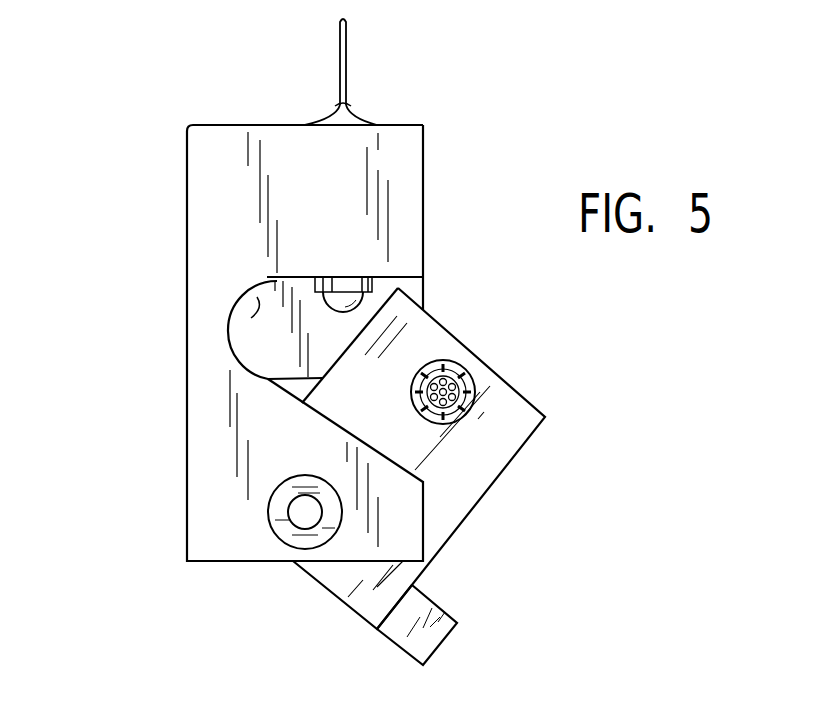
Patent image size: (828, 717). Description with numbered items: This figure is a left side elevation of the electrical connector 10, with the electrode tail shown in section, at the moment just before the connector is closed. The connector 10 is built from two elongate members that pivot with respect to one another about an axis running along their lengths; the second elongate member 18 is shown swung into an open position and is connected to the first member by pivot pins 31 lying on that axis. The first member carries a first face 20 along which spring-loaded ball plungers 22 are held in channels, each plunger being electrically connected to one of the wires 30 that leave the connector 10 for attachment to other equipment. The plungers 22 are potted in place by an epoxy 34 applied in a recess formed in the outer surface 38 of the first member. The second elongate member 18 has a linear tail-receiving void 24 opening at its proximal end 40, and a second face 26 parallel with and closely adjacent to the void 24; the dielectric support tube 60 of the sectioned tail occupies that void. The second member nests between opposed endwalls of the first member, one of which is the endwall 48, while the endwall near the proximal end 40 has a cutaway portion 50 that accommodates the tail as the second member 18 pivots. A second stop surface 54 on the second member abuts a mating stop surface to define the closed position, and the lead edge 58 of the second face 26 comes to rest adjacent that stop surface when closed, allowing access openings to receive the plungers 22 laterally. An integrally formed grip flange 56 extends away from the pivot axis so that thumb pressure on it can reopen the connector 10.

The electrical connector 10 is at (172, 157).
The second elongate member 18 is at (480, 502).
The first face 20 is at (410, 277).
The spring-loaded ball plungers 22 is at (327, 313).
The linear tail-receiving void 24 is at (453, 360).
The second face 26 is at (537, 405).
The wires 30 is at (345, 48).
The pivot pins 31 is at (295, 523).
The epoxy 34 is at (331, 113).
The outer surface 38 is at (210, 125).
The proximal end 40 is at (492, 438).
The endwall 48 is at (262, 354).
The cutaway portion 50 is at (257, 297).
The second stop surface 54 is at (232, 377).
The grip flange 56 is at (437, 640).
The lead edge 58 is at (398, 288).
The dielectric support tube 60 is at (467, 381).